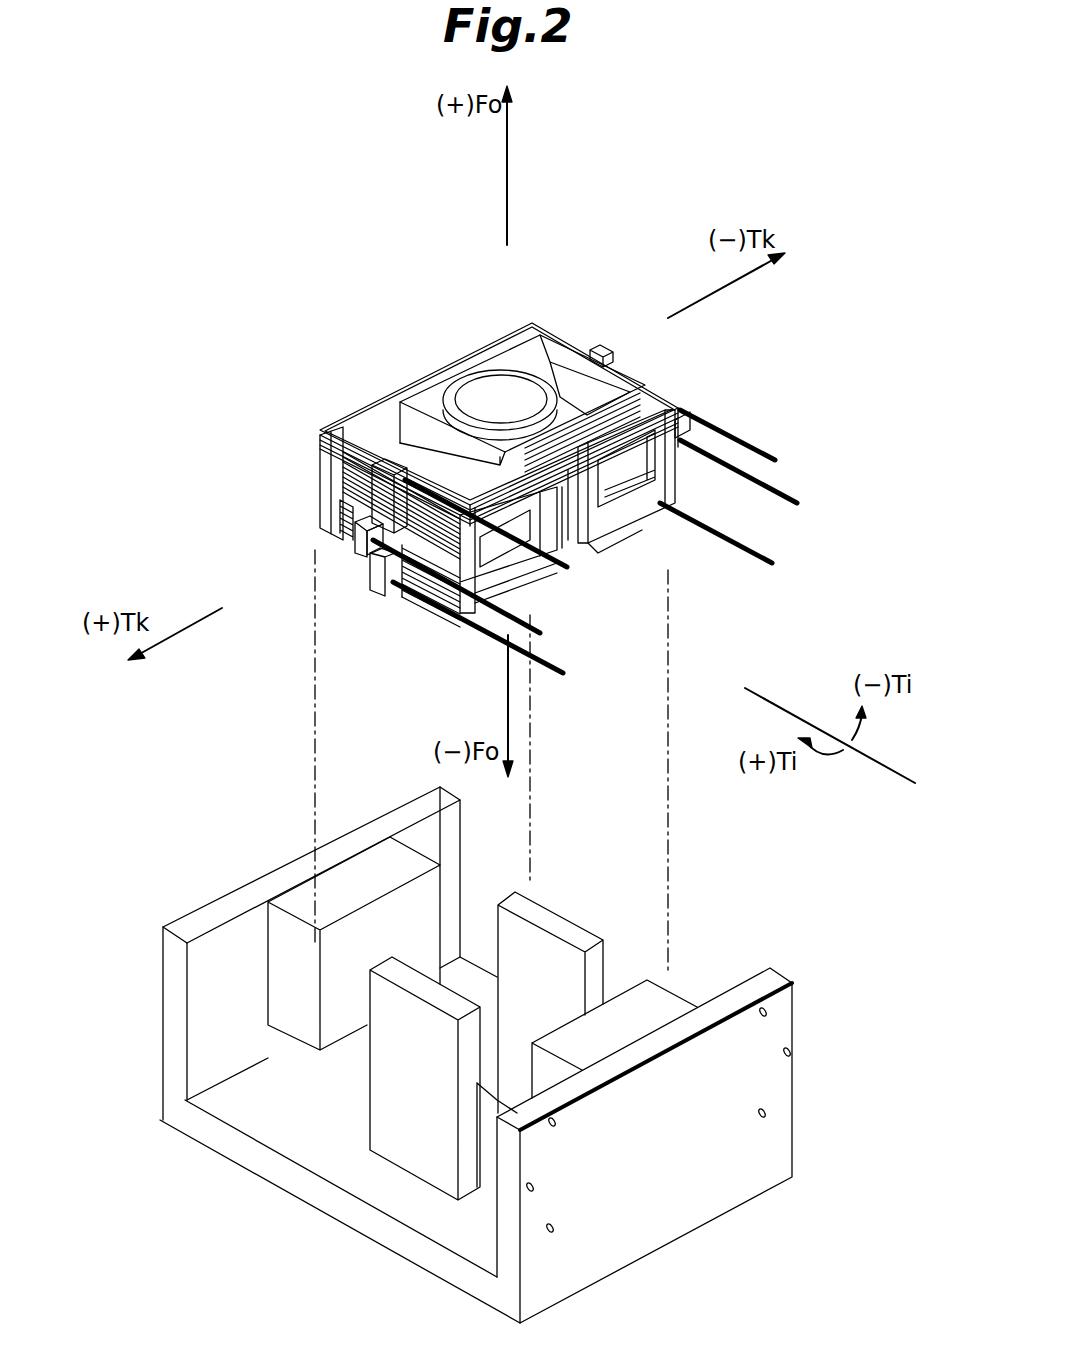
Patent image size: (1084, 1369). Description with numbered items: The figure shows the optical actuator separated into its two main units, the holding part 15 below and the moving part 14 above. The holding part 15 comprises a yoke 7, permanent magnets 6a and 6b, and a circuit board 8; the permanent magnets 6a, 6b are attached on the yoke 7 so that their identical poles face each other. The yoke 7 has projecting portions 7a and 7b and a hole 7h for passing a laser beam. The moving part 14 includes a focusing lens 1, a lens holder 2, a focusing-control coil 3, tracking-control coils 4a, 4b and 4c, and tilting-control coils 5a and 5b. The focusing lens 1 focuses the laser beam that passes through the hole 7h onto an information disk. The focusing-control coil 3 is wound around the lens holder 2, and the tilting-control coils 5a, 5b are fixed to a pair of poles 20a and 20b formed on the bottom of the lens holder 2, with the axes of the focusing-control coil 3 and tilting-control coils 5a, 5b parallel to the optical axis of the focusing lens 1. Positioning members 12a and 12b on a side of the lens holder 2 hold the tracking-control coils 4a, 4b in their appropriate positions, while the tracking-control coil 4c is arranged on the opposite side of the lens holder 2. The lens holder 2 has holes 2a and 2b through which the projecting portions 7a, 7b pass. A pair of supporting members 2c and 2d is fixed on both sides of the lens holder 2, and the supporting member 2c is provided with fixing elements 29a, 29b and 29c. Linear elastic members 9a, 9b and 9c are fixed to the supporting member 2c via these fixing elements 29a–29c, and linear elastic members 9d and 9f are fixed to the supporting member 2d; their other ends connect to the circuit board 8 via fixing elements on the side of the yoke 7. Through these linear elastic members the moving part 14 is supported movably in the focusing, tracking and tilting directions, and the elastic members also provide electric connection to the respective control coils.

The focusing lens 1 is at (488, 385).
The lens holder 2 is at (432, 365).
The hole 2a is at (385, 398).
The hole 2b is at (512, 345).
The supporting member 2c is at (345, 552).
The supporting member 2d is at (603, 350).
The focusing-control coil 3 is at (362, 410).
The tracking-control coil 4a is at (427, 593).
The tracking-control coil 4b is at (697, 440).
The tracking-control coil 4c is at (320, 452).
The tilting-control coil 5a is at (370, 523).
The tilting-control coil 5b is at (647, 537).
The permanent magnet 6a is at (617, 1028).
The permanent magnet 6b is at (325, 895).
The yoke 7 is at (342, 1203).
The projecting portion 7a is at (390, 968).
The projecting portion 7b is at (560, 933).
The hole 7h is at (483, 1177).
The circuit board 8 is at (630, 1213).
The linear elastic member 9a is at (427, 587).
The linear elastic member 9b is at (443, 610).
The linear elastic member 9c is at (520, 632).
The linear elastic member 9d is at (717, 440).
The linear elastic member 9f is at (713, 532).
The positioning member 12a is at (522, 568).
The positioning member 12b is at (663, 460).
The moving part 14 is at (420, 310).
The holding part 15 is at (693, 1250).
The pole 20a is at (530, 588).
The pole 20b is at (632, 540).
The fixing element 29a is at (380, 487).
The fixing element 29b is at (360, 543).
The fixing element 29c is at (370, 582).